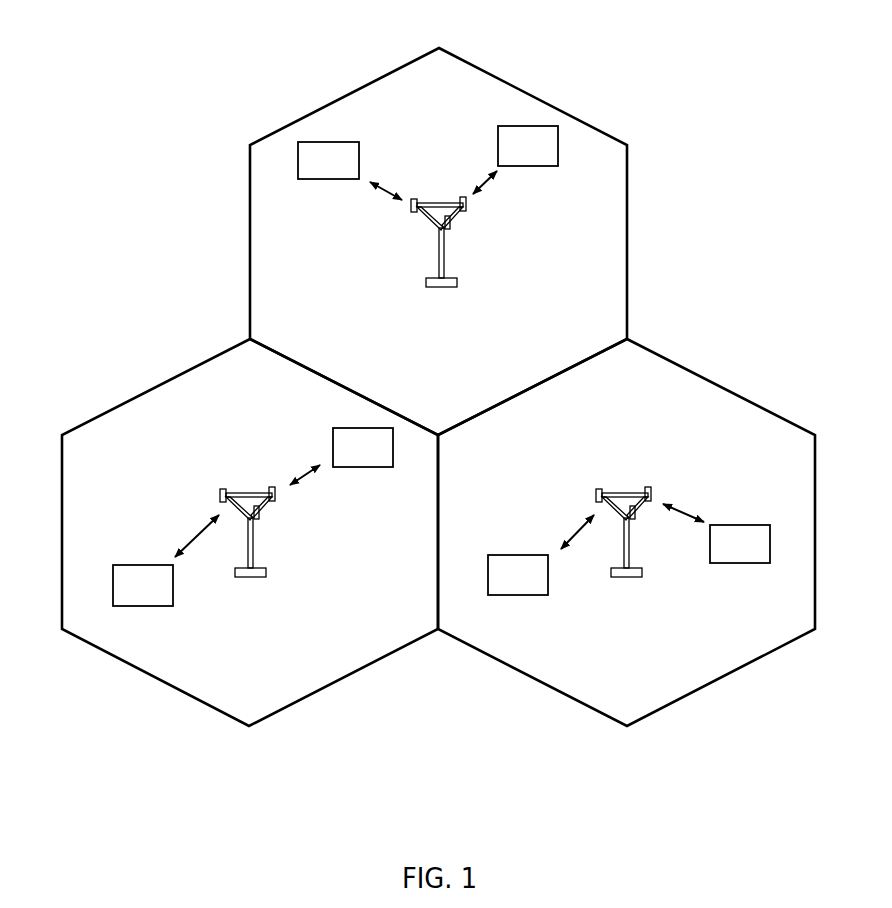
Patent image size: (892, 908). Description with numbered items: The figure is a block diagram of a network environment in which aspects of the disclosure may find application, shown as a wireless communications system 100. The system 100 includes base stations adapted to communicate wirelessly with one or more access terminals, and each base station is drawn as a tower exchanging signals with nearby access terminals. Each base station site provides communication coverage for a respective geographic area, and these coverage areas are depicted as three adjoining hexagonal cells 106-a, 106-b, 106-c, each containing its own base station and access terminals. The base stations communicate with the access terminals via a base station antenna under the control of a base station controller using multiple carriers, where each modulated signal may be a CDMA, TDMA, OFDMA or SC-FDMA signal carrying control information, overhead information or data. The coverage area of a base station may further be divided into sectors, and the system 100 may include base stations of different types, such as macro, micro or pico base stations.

The wireless communications system 100 is at (736, 74).
The cell 106-a is at (135, 397).
The cell 106-b is at (515, 88).
The cell 106-c is at (718, 386).